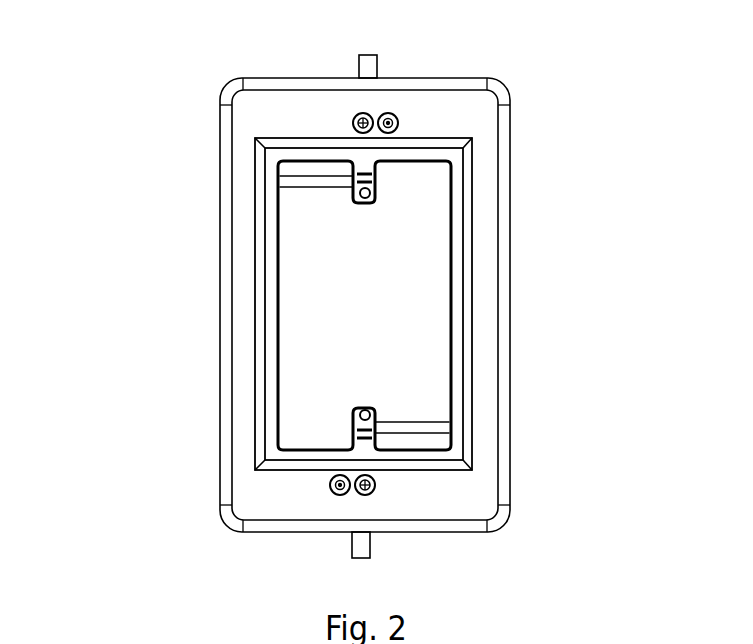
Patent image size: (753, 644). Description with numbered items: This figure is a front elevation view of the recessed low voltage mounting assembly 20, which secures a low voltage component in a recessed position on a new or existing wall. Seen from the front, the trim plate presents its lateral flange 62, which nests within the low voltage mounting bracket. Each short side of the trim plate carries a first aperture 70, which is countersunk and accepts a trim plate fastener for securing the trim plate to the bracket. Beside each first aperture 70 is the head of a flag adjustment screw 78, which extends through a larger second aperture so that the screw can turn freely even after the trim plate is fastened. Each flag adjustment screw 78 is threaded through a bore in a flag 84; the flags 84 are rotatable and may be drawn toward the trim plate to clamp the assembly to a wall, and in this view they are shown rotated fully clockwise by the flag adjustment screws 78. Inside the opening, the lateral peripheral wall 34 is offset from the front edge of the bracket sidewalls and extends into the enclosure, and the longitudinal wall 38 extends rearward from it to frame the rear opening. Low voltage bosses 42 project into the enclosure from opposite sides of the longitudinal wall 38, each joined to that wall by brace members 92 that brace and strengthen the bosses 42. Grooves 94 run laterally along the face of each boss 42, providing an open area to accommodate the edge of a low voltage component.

The recessed low voltage mounting assembly 20 is at (134, 120).
The lateral peripheral wall 34 is at (432, 155).
The longitudinal wall 38 is at (413, 162).
The low voltage bosses 42 is at (365, 202).
The lateral flange 62 is at (460, 126).
The first aperture 70 is at (392, 120).
The flag adjustment screws 78 is at (357, 118).
The flags 84 is at (370, 55).
The brace members 92 is at (313, 198).
The grooves 94 is at (350, 177).